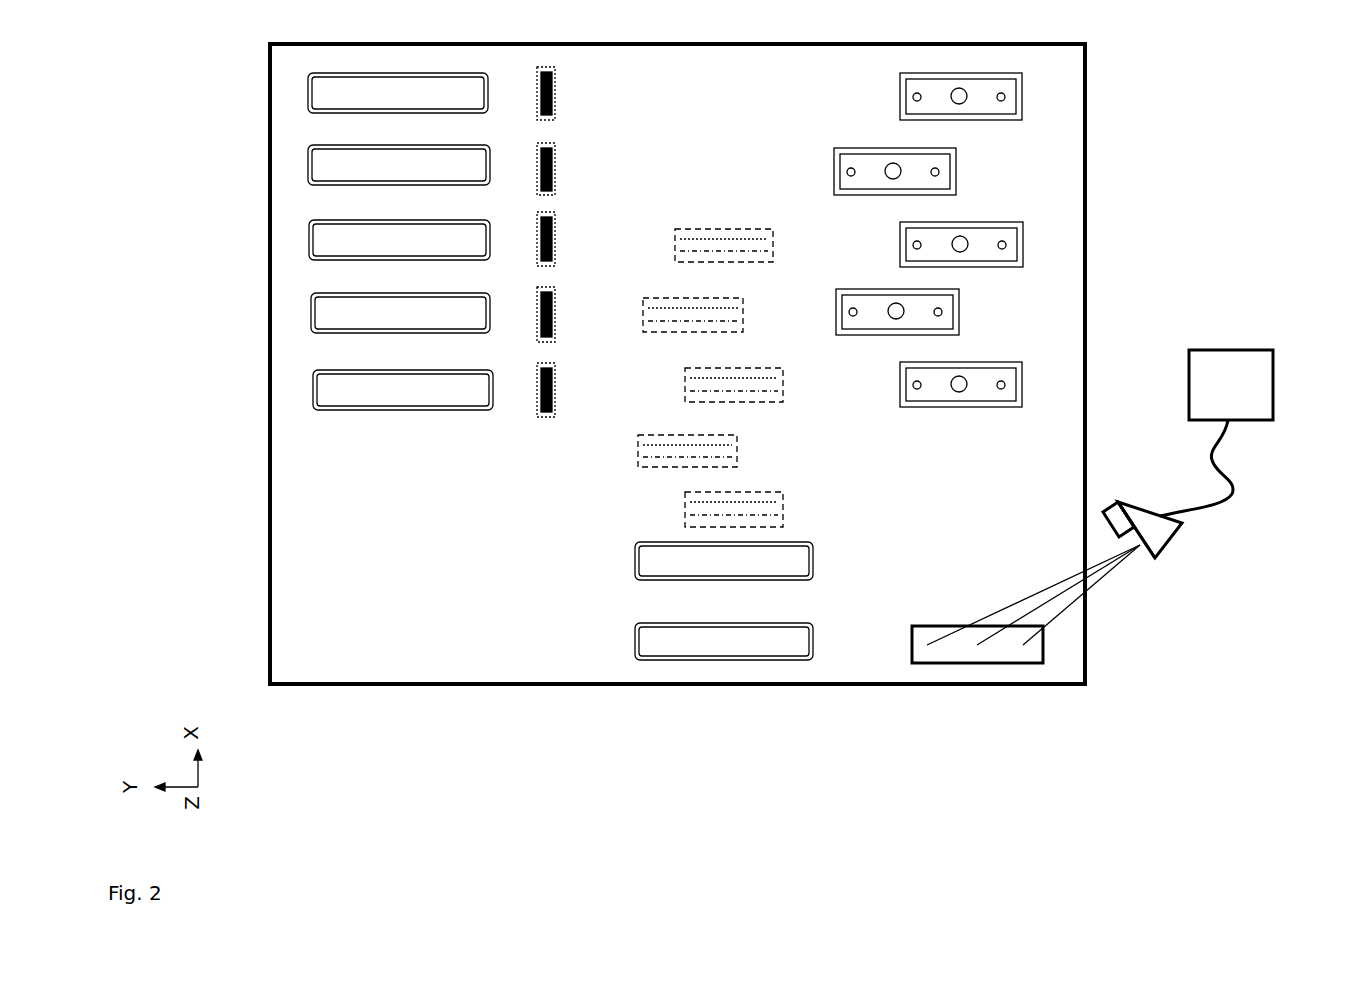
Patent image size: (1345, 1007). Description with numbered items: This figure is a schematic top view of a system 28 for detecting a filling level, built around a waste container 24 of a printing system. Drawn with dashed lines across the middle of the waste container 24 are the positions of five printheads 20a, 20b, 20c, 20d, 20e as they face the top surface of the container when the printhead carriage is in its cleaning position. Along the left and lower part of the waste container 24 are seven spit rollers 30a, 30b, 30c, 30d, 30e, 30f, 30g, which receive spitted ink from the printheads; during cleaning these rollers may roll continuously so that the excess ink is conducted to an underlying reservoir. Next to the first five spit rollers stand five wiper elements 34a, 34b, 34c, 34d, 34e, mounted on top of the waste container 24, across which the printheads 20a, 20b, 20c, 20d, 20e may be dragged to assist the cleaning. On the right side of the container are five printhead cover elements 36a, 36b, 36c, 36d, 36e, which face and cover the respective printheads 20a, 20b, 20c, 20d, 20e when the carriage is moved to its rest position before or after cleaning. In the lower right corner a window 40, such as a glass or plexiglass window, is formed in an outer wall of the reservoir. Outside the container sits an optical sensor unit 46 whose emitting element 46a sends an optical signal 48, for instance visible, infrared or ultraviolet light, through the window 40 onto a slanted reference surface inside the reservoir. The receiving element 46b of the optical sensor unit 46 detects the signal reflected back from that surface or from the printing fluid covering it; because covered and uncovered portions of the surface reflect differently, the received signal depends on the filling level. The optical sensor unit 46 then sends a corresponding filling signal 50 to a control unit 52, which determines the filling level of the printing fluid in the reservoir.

The printhead 20a is at (735, 228).
The printhead 20b is at (746, 310).
The printhead 20c is at (786, 386).
The printhead 20d is at (740, 450).
The printhead 20e is at (785, 500).
The waste container 24 is at (269, 520).
The system for detecting a filling level 28 is at (1188, 168).
The spit roller 30a is at (306, 105).
The spit roller 30b is at (306, 172).
The spit roller 30c is at (307, 242).
The spit roller 30d is at (309, 320).
The spit roller 30e is at (311, 397).
The spit roller 30f is at (816, 560).
The spit roller 30g is at (816, 640).
The wiper element 34a is at (560, 92).
The wiper element 34b is at (560, 175).
The wiper element 34c is at (560, 240).
The wiper element 34d is at (560, 310).
The wiper element 34e is at (560, 390).
The printhead cover element 36a is at (1024, 92).
The printhead cover element 36b is at (965, 172).
The printhead cover element 36c is at (1026, 244).
The printhead cover element 36d is at (968, 312).
The printhead cover element 36e is at (1024, 388).
The window 40 is at (965, 665).
The optical sensor unit 46 is at (1172, 553).
The emitting element 46a is at (1140, 552).
The receiving element 46b is at (1107, 499).
The optical signal 48 is at (1060, 615).
The filling signal 50 is at (1237, 492).
The control unit 52 is at (1275, 380).